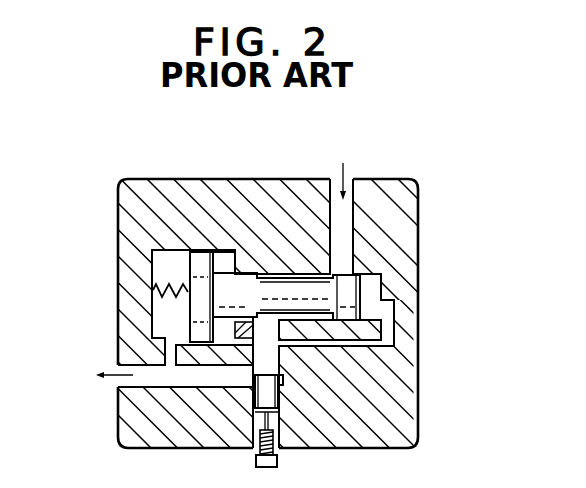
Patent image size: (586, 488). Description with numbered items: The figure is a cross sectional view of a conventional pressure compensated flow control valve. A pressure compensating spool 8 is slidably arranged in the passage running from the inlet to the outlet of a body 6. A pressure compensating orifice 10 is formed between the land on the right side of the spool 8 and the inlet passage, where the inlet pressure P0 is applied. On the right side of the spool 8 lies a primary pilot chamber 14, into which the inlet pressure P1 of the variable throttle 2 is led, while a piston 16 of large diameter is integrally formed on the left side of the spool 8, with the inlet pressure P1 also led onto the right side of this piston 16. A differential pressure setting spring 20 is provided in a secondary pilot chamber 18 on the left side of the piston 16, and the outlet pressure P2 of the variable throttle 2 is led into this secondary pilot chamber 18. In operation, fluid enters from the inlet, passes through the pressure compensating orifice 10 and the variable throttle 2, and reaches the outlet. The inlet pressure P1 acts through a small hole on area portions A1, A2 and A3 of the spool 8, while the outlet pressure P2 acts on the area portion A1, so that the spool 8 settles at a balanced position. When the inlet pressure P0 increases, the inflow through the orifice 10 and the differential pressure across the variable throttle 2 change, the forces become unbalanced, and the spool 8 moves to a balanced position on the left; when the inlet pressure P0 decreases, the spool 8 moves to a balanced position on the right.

The body 6 is at (143, 188).
The piston 16 is at (201, 253).
The pressure compensating spool 8 is at (292, 288).
The pressure compensating orifice 10 is at (339, 264).
The primary pilot chamber 14 is at (373, 288).
The secondary pilot chamber 18 is at (165, 268).
The differential pressure setting spring 20 is at (166, 294).
The variable throttle 2 is at (247, 374).
The area portion A1 is at (185, 323).
The area portion A2 is at (219, 265).
The area portion A3 is at (369, 310).
The inlet pressure P0 is at (345, 200).
The inlet pressure of the variable throttle P1 is at (259, 352).
The outlet pressure of the variable throttle P2 is at (174, 378).